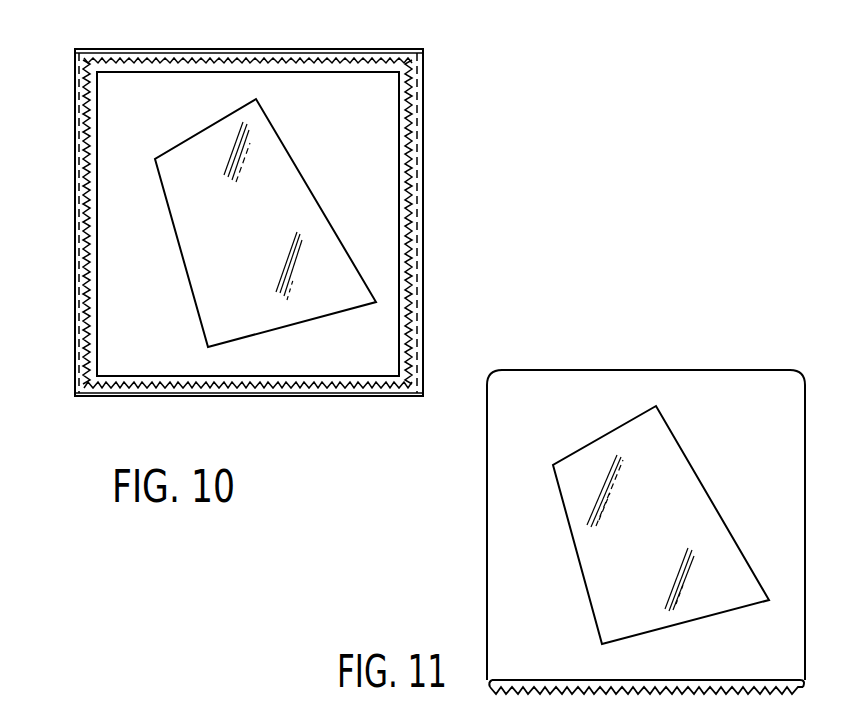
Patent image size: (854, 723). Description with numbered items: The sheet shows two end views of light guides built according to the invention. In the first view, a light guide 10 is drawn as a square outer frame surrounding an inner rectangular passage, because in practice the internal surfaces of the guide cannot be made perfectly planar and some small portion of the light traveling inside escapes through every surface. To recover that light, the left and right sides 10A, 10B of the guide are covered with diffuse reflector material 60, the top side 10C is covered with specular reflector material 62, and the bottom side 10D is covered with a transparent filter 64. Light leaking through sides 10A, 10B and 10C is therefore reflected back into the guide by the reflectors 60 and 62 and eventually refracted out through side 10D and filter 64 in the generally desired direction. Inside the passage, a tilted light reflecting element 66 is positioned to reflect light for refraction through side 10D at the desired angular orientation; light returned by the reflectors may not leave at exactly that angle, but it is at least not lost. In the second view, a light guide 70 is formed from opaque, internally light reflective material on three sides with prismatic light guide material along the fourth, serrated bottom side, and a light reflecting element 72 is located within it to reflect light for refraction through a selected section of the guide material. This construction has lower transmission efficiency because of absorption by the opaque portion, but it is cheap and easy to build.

In FIG. 10, the light guide 10 is at (97, 96).
In FIG. 10, the side of light guide 10A is at (97, 215).
In FIG. 10, the side of light guide 10B is at (398, 172).
In FIG. 10, the side of light guide 10C is at (352, 73).
In FIG. 10, the side of light guide 10D is at (162, 375).
In FIG. 10, the diffuse reflector material 60 is at (83, 178).
In FIG. 10, the specular reflector material 62 is at (209, 57).
In FIG. 10, the transparent filter 64 is at (173, 390).
In FIG. 10, the light reflecting element 66 is at (320, 320).
In FIG. 11, the light guide 70 is at (642, 370).
In FIG. 11, the light reflecting element 72 is at (675, 472).